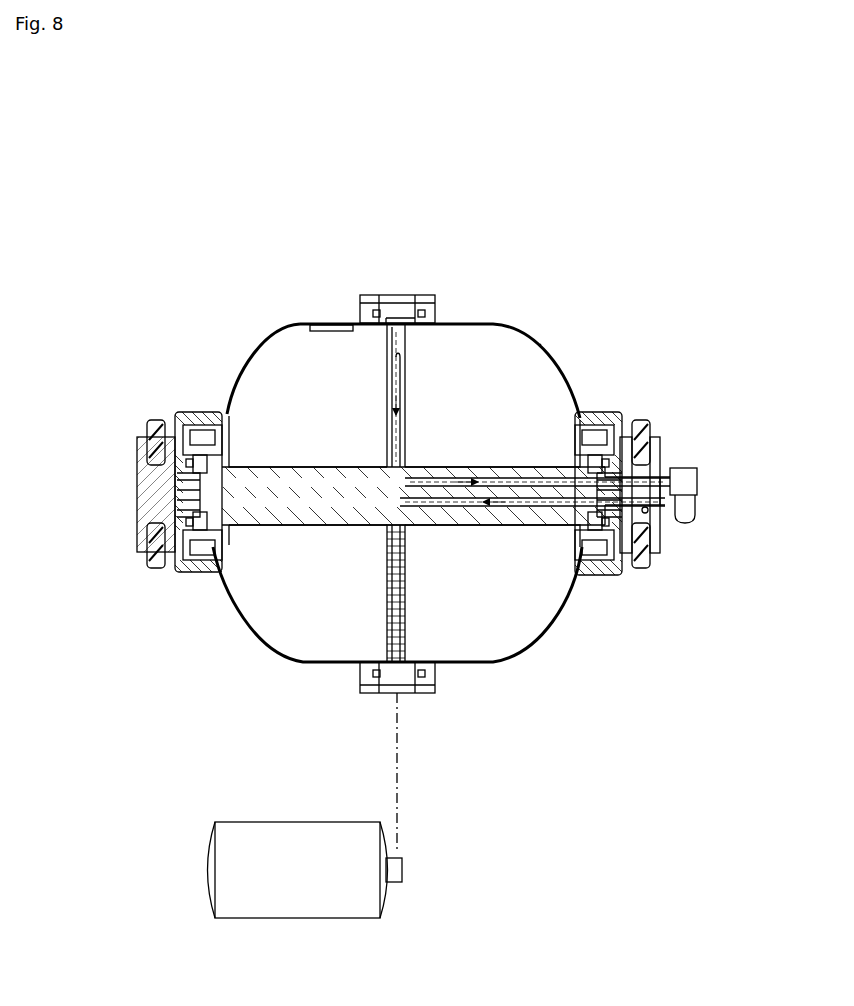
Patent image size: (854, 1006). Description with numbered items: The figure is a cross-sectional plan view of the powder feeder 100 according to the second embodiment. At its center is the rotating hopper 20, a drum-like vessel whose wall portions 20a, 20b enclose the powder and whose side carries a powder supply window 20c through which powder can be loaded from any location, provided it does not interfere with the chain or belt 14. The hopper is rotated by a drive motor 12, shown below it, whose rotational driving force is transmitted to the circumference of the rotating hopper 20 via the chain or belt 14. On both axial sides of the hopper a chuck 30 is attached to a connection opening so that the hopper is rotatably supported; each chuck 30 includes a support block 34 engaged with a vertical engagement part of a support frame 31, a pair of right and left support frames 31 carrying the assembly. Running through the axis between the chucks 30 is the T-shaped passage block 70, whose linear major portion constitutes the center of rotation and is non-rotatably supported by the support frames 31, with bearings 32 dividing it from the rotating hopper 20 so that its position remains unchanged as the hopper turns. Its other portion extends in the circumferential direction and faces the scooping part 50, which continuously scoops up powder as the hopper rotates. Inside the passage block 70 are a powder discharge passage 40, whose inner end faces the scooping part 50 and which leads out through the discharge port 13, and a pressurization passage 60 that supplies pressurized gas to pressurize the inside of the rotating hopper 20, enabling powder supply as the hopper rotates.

The powder feeder 100 is at (416, 384).
The rotating hopper 20 is at (380, 422).
The hopper side wall 20a is at (542, 344).
The hopper side wall 20b is at (296, 322).
The powder supply window 20c is at (318, 324).
The powder discharge passage 40 is at (400, 357).
The passage block 70 is at (305, 473).
The pressurization passage 60 is at (462, 508).
The scooping part 50 is at (394, 604).
The bearing 32 is at (598, 427).
The chuck 30 is at (130, 494).
The support frame 31 is at (158, 423).
The support block 34 is at (152, 512).
The discharge port 13 is at (733, 468).
The chain or belt 14 is at (397, 778).
The drive motor 12 is at (247, 850).